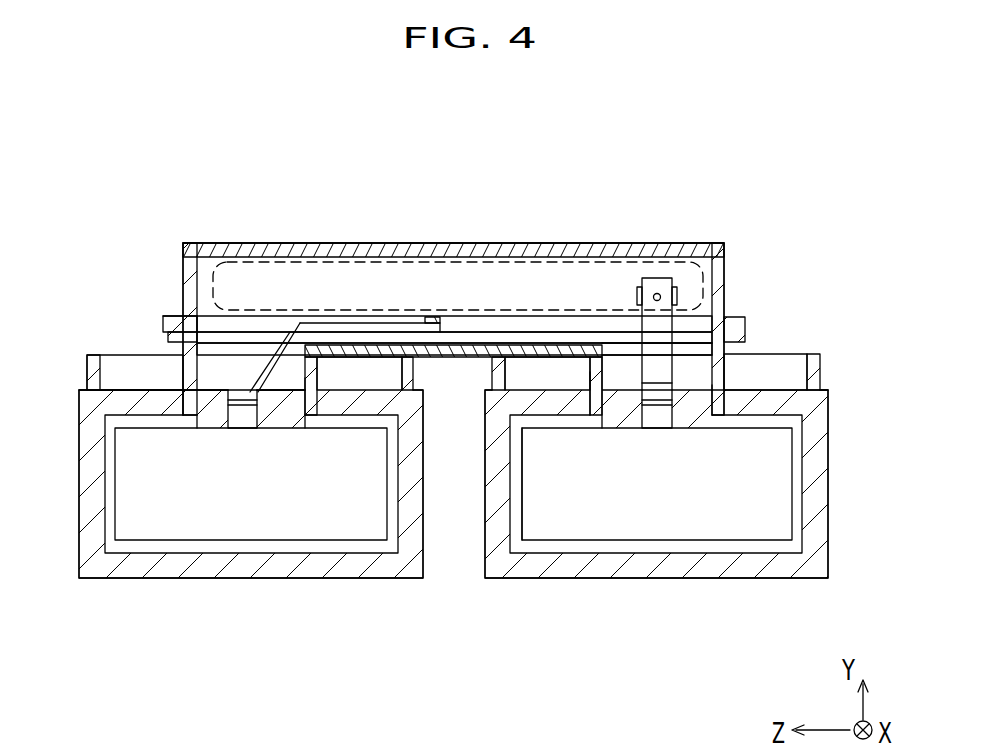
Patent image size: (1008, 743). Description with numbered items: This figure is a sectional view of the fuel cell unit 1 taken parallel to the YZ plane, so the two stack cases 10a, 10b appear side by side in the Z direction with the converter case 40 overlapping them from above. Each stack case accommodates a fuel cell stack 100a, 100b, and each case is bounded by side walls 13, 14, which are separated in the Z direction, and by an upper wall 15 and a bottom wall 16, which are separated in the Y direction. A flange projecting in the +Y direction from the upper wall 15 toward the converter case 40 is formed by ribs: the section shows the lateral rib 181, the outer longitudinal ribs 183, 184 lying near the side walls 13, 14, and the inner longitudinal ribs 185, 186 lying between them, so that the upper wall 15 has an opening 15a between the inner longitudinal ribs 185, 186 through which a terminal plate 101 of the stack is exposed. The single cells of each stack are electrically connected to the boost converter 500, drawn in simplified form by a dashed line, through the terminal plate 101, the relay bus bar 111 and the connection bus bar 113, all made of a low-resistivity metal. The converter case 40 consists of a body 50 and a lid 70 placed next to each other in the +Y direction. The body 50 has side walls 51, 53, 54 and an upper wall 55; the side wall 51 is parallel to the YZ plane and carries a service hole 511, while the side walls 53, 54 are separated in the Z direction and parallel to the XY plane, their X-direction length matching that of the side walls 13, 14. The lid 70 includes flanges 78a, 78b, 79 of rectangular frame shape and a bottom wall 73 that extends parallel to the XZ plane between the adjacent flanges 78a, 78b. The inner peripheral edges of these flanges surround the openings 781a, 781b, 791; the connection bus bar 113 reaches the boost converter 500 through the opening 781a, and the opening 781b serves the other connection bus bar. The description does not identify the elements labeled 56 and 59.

The fuel cell unit 1 is at (740, 186).
The stack case 10a is at (768, 607).
The stack case 10b is at (149, 612).
The side wall 13 is at (415, 518).
The side wall 14 is at (503, 520).
The upper wall 15 is at (130, 407).
The opening 15a is at (213, 398).
The bottom wall 16 is at (358, 570).
The converter case 40 is at (533, 277).
The body 50 is at (484, 281).
The side wall 51 is at (202, 275).
The side wall 53 is at (725, 282).
The side wall 54 is at (190, 243).
The upper wall 55 is at (527, 257).
The base layer 56 is at (468, 322).
The protrusion 59 is at (168, 316).
The lid 70 is at (760, 337).
The bottom wall 73 is at (448, 357).
The flange 78a is at (725, 349).
The flange 78b is at (185, 350).
The flange 79 is at (162, 332).
The fuel cell stack 100a is at (594, 515).
The fuel cell stack 100b is at (317, 513).
The terminal plate 101 is at (252, 420).
The relay bus bar 111 is at (330, 322).
The connection bus bar 113 is at (653, 347).
The lateral rib 181 is at (157, 372).
The outer longitudinal rib 183 is at (407, 377).
The outer longitudinal rib 184 is at (97, 366).
The inner longitudinal rib 185 is at (310, 378).
The inner longitudinal rib 186 is at (188, 374).
The boost converter 500 is at (660, 243).
The service hole 511 is at (634, 285).
The opening 781a is at (610, 352).
The opening 781b is at (237, 345).
The opening 791 is at (495, 335).